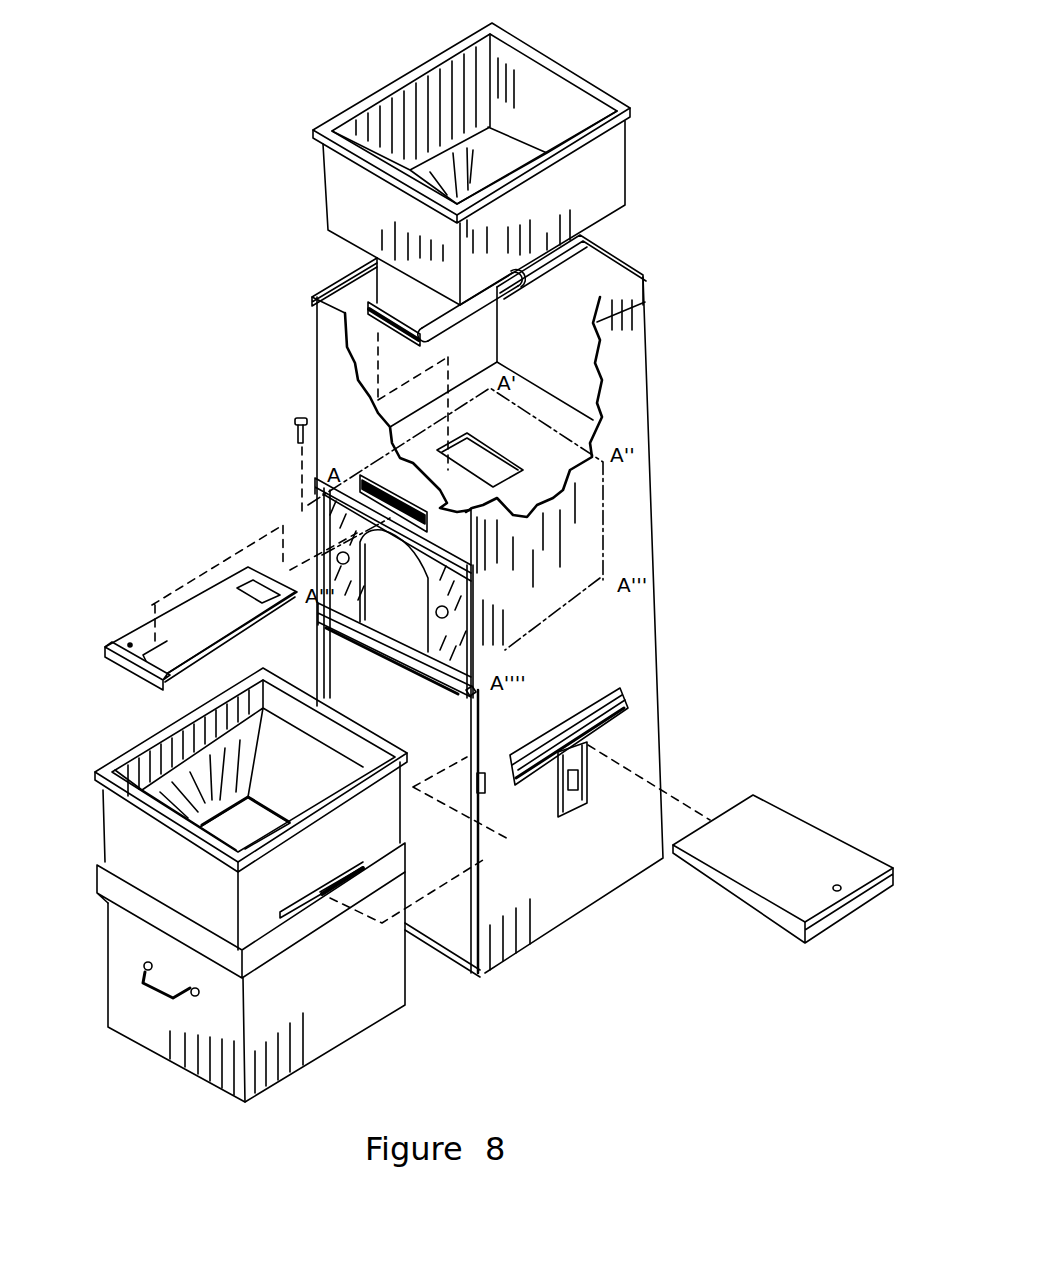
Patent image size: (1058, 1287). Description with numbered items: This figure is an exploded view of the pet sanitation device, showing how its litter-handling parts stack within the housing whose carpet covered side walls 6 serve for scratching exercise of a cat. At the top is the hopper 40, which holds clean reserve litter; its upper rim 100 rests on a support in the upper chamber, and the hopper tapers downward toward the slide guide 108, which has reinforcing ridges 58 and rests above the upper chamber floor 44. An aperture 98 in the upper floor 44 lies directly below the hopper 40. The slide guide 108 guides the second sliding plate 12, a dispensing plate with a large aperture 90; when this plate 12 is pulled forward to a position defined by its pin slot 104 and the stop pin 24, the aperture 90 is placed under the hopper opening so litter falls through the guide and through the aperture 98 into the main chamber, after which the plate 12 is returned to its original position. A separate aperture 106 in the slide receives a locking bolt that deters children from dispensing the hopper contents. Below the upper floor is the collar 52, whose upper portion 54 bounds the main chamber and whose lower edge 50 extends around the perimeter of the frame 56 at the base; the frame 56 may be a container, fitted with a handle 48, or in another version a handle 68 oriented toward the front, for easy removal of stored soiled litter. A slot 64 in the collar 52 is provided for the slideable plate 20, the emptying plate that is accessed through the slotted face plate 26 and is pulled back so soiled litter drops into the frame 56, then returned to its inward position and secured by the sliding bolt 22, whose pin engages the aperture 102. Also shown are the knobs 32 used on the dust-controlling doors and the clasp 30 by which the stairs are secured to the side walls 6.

The side walls 6 is at (630, 367).
The second sliding plate 12 is at (183, 667).
The slideable plate 20 is at (900, 867).
The sliding bolt 22 is at (576, 765).
The pin 24 is at (293, 416).
The slotted face plate 26 is at (606, 689).
The clasp 30 is at (483, 775).
The knobs 32 is at (452, 606).
The hopper 40 is at (612, 172).
The upper chamber floor 44 is at (520, 390).
The handle 48 is at (140, 992).
The lower edge 50 is at (102, 883).
The collar 52 is at (103, 834).
The upper portion 54 is at (96, 776).
The frame 56 is at (393, 987).
The reinforcing ridges 58 is at (520, 274).
The slot 64 is at (295, 902).
The handle 68 is at (467, 695).
The large aperture 90 is at (272, 594).
The aperture 98 is at (478, 462).
The upper rim 100 is at (622, 118).
The aperture 102 is at (838, 892).
The pin slot 104 is at (142, 663).
The aperture 106 is at (128, 644).
The slide guide 108 is at (525, 283).